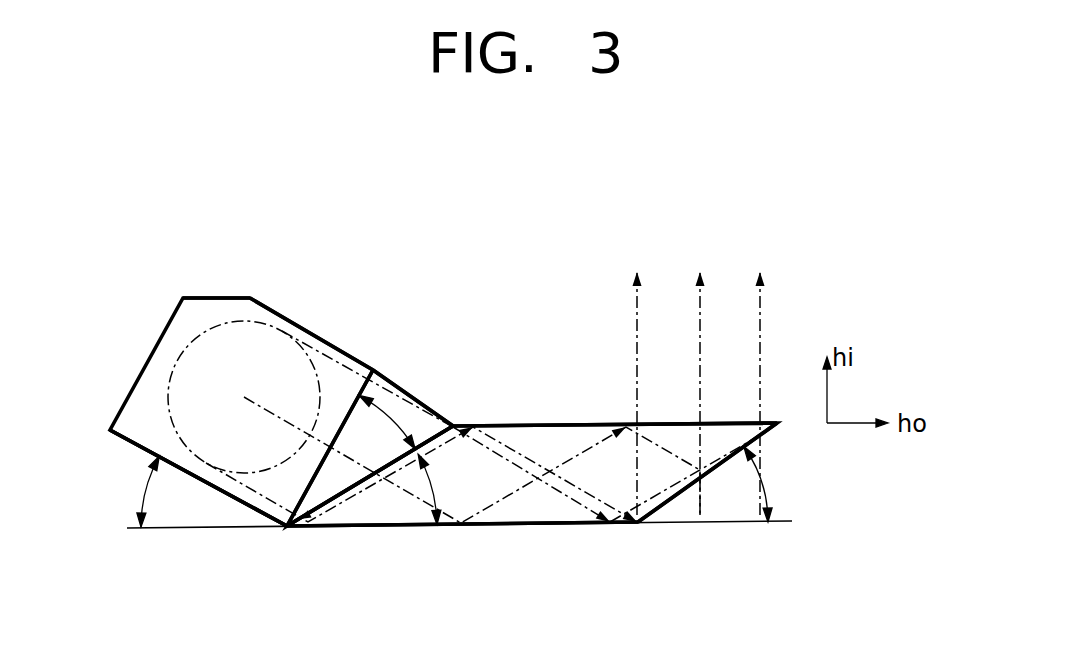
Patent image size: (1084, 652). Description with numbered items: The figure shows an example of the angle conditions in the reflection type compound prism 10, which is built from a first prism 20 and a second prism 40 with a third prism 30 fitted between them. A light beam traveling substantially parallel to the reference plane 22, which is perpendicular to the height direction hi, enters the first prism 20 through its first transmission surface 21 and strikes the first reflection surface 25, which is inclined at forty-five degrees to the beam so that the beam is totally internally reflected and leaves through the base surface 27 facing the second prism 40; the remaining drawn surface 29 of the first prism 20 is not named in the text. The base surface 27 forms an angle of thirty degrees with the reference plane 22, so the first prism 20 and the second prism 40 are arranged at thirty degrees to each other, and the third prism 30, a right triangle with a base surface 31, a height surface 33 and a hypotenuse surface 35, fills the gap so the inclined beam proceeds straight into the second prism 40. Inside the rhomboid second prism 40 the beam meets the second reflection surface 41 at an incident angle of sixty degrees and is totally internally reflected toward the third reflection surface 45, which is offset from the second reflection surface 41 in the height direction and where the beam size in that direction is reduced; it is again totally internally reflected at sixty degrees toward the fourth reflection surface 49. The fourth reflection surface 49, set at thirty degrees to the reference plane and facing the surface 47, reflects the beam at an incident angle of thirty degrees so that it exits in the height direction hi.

The reflection type compound prism 10 is at (211, 266).
The first prism 20 is at (152, 352).
The first transmission surface 21 is at (233, 500).
The reference plane 22 is at (160, 528).
The first reflection surface 25 is at (233, 500).
The base surface 27 is at (340, 350).
The top surface 29 is at (228, 293).
The third prism 30 is at (397, 385).
The base surface 31 is at (413, 405).
The height surface 33 is at (330, 500).
The hypotenuse surface 35 is at (430, 410).
The second prism 40 is at (545, 423).
The second reflection surface 41 is at (537, 518).
The third reflection surface 45 is at (582, 427).
The surface facing the fourth reflection surface 47 is at (377, 477).
The fourth reflection surface 49 is at (685, 492).